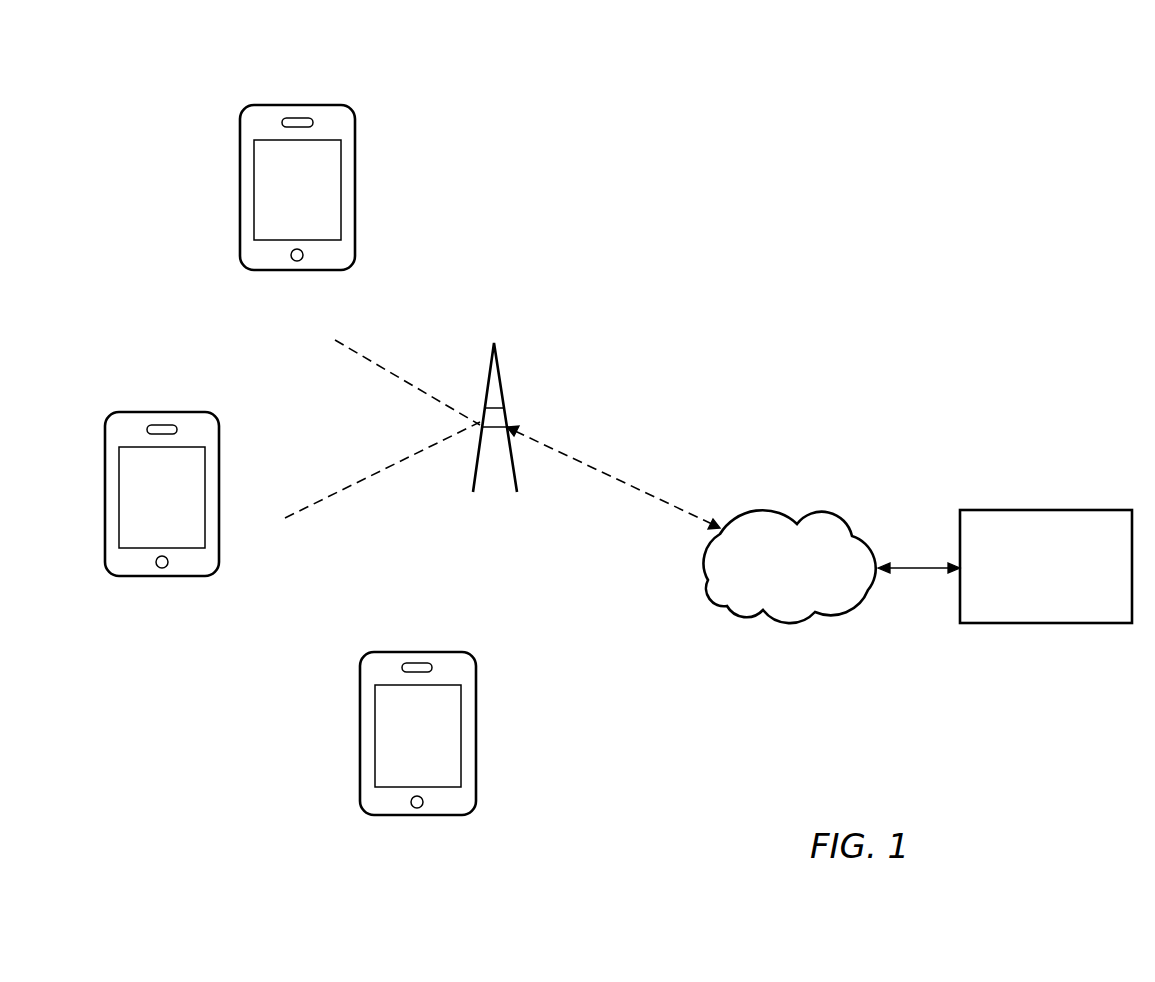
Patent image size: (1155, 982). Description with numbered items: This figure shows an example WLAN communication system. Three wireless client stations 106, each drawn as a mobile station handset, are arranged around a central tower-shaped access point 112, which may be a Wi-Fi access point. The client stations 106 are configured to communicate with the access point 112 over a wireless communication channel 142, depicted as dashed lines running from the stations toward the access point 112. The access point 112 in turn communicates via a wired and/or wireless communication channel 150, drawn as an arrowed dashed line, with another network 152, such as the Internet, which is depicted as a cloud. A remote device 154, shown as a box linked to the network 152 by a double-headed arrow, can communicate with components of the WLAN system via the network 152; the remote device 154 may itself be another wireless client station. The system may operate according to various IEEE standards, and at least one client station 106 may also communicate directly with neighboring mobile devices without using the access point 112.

The wireless client station 106 is at (295, 270).
The access point 112 is at (511, 490).
The wireless communication channel 142 is at (390, 465).
The communication channel 150 is at (622, 480).
The network 152 is at (790, 566).
The remote device 154 is at (1005, 566).